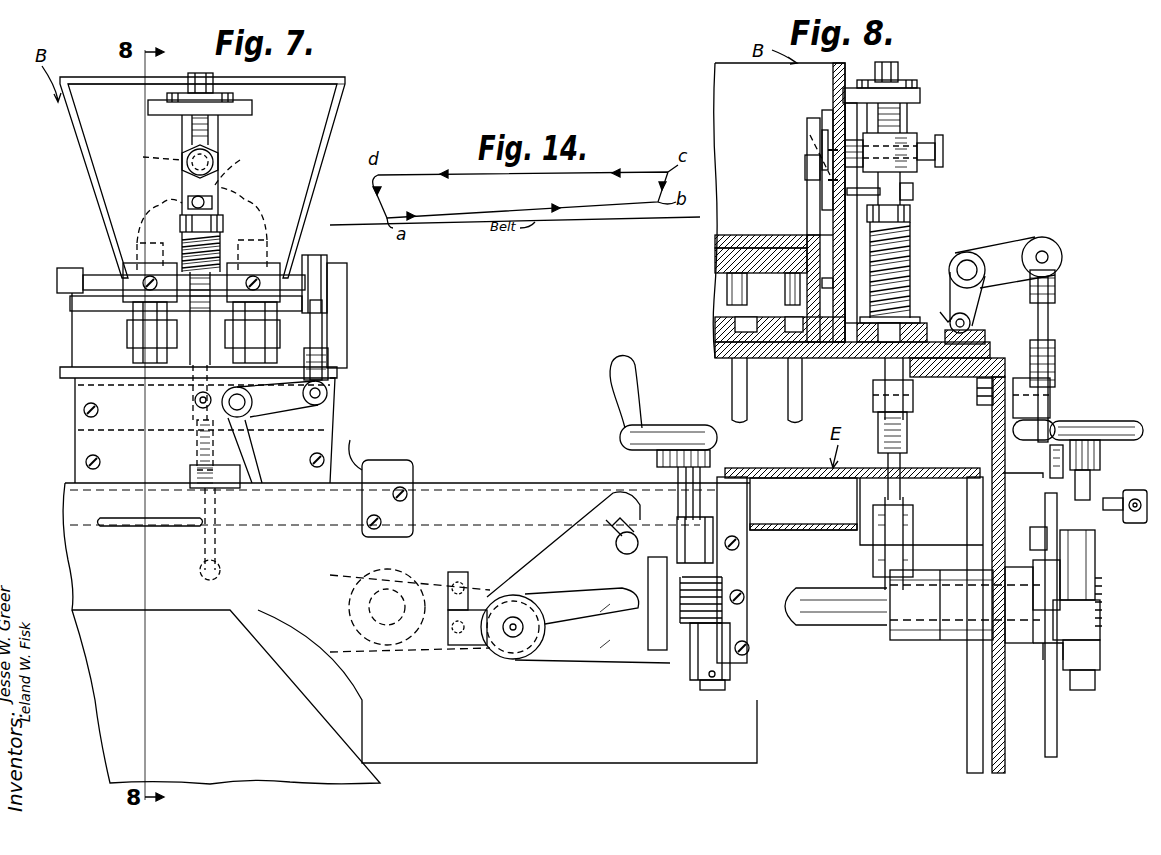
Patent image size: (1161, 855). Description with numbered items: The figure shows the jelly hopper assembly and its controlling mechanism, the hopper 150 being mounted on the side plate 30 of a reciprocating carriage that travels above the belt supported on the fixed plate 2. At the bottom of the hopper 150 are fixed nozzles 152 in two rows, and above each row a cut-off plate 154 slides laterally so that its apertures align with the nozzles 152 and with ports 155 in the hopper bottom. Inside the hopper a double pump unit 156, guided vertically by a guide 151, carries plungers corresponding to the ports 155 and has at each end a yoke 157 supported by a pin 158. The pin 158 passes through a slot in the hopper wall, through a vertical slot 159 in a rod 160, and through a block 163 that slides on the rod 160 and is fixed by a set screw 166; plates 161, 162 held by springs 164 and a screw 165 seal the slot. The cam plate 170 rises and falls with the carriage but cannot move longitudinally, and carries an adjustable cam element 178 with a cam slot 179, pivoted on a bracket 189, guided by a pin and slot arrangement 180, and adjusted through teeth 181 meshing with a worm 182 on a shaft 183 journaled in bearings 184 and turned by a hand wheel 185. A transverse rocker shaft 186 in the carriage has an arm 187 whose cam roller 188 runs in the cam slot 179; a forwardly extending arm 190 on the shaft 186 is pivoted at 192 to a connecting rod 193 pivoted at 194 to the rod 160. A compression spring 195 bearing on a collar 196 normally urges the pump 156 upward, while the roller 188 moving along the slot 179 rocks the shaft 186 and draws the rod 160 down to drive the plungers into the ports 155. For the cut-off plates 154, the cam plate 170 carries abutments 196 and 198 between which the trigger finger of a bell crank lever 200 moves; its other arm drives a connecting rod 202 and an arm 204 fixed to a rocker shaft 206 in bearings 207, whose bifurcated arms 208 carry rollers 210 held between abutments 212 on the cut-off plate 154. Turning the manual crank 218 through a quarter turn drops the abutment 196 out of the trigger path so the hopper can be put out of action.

In FIG. 8, the fixed plate 2 is at (850, 478).
In FIG. 7, the side plate 30 is at (361, 448).
In FIG. 8, the side plate 30 is at (1005, 524).
In FIG. 7, the hopper 150 is at (318, 142).
In FIG. 8, the guide 151 is at (827, 285).
In FIG. 7, the fixed nozzles 152 is at (140, 412).
In FIG. 8, the fixed nozzles 152 is at (802, 382).
In FIG. 7, the cut-off plate 154 is at (143, 352).
In FIG. 8, the cut-off plate 154 is at (868, 355).
In FIG. 8, the ports 155 is at (795, 312).
In FIG. 8, the double pump unit 156 is at (762, 244).
In FIG. 7, the yoke 157 is at (245, 195).
In FIG. 8, the yoke 157 is at (806, 165).
In FIG. 7, the pin 158 is at (143, 149).
In FIG. 8, the pin 158 is at (806, 145).
In FIG. 7, the vertical slot 159 is at (239, 160).
In FIG. 7, the rod 160 is at (215, 83).
In FIG. 8, the rod 160 is at (900, 70).
In FIG. 7, the plate 161 is at (220, 138).
In FIG. 8, the plate 161 is at (850, 200).
In FIG. 8, the plate 162 is at (828, 105).
In FIG. 7, the block 163 is at (188, 162).
In FIG. 8, the block 163 is at (905, 133).
In FIG. 8, the springs 164 is at (825, 130).
In FIG. 7, the screw 165 is at (192, 200).
In FIG. 8, the screw 165 is at (913, 190).
In FIG. 7, the set screw 166 is at (190, 152).
In FIG. 8, the set screw 166 is at (945, 148).
In FIG. 7, the cam plate 170 is at (352, 665).
In FIG. 8, the cam plate 170 is at (1057, 731).
In FIG. 7, the adjustable cam element 178 is at (648, 642).
In FIG. 8, the adjustable cam element 178 is at (1062, 652).
In FIG. 7, the cam slot 179 is at (600, 642).
In FIG. 7, the pin and slot arrangement 180 is at (600, 545).
In FIG. 7, the teeth 181 is at (690, 660).
In FIG. 8, the teeth 181 is at (1100, 648).
In FIG. 7, the worm 182 is at (722, 612).
In FIG. 8, the worm 182 is at (1100, 592).
In FIG. 7, the shaft 183 is at (714, 692).
In FIG. 8, the shaft 183 is at (1095, 686).
In FIG. 7, the bearings 184 is at (730, 573).
In FIG. 7, the hand wheel 185 is at (630, 372).
In FIG. 8, the hand wheel 185 is at (1105, 425).
In FIG. 7, the rocker shaft 186 is at (388, 600).
In FIG. 8, the rocker shaft 186 is at (852, 626).
In FIG. 7, the arm 187 is at (448, 575).
In FIG. 8, the arm 187 is at (1038, 578).
In FIG. 7, the cam roller 188 is at (528, 606).
In FIG. 8, the cam roller 188 is at (1098, 610).
In FIG. 7, the bracket 189 is at (476, 646).
In FIG. 8, the bracket 189 is at (1082, 622).
In FIG. 7, the forwardly extending arm 190 is at (298, 562).
In FIG. 8, the forwardly extending arm 190 is at (905, 605).
In FIG. 7, the pivotal connection 192 is at (202, 575).
In FIG. 8, the pivotal connection 192 is at (910, 560).
In FIG. 7, the connecting rod 193 is at (195, 452).
In FIG. 8, the connecting rod 193 is at (906, 460).
In FIG. 7, the pivotal connection 194 is at (195, 400).
In FIG. 8, the pivotal connection 194 is at (913, 392).
In FIG. 7, the compression spring 195 is at (222, 244).
In FIG. 8, the compression spring 195 is at (905, 238).
In FIG. 7, the collar / abutment 196 is at (225, 222).
In FIG. 8, the collar / abutment 196 is at (912, 212).
In FIG. 7, the abutment 198 is at (395, 462).
In FIG. 7, the bell crank lever 200 is at (248, 440).
In FIG. 8, the bell crank lever 200 is at (1045, 422).
In FIG. 7, the connecting rod 202 is at (324, 328).
In FIG. 8, the connecting rod 202 is at (1052, 318).
In FIG. 7, the arm 204 is at (318, 256).
In FIG. 8, the arm 204 is at (1018, 250).
In FIG. 7, the rocker shaft 206 is at (103, 275).
In FIG. 8, the rocker shaft 206 is at (966, 262).
In FIG. 7, the bearings 207 is at (57, 278).
In FIG. 7, the bifurcated arms 208 is at (70, 304).
In FIG. 8, the bifurcated arms 208 is at (980, 300).
In FIG. 7, the roller 210 is at (206, 346).
In FIG. 8, the roller 210 is at (985, 335).
In FIG. 8, the abutments 212 is at (945, 318).
In FIG. 7, the manual crank 218 is at (128, 526).
In FIG. 8, the manual crank 218 is at (1138, 524).